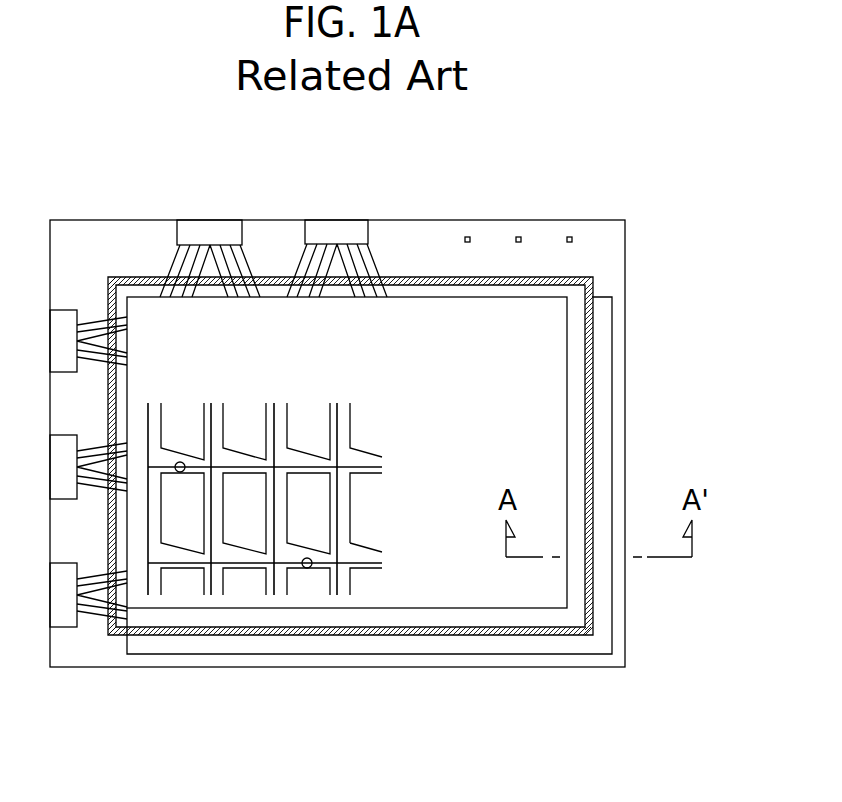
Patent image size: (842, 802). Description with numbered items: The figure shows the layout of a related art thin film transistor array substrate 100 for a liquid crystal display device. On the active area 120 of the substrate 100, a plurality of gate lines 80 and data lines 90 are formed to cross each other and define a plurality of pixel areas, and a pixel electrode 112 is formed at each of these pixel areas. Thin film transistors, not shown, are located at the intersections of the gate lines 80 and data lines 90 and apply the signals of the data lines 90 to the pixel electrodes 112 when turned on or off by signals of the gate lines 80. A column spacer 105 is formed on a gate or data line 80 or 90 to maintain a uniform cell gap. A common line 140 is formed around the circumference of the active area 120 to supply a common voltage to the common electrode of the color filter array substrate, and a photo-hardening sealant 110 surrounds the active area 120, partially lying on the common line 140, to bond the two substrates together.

The thin film transistor array substrate 100 is at (625, 254).
The photo-hardening sealant 110 is at (125, 277).
The active area 120 is at (547, 454).
The common line 140 is at (578, 386).
The gate line 80 is at (362, 467).
The data line 90 is at (338, 512).
The pixel electrode 112 is at (246, 528).
The column spacer 105 is at (309, 569).